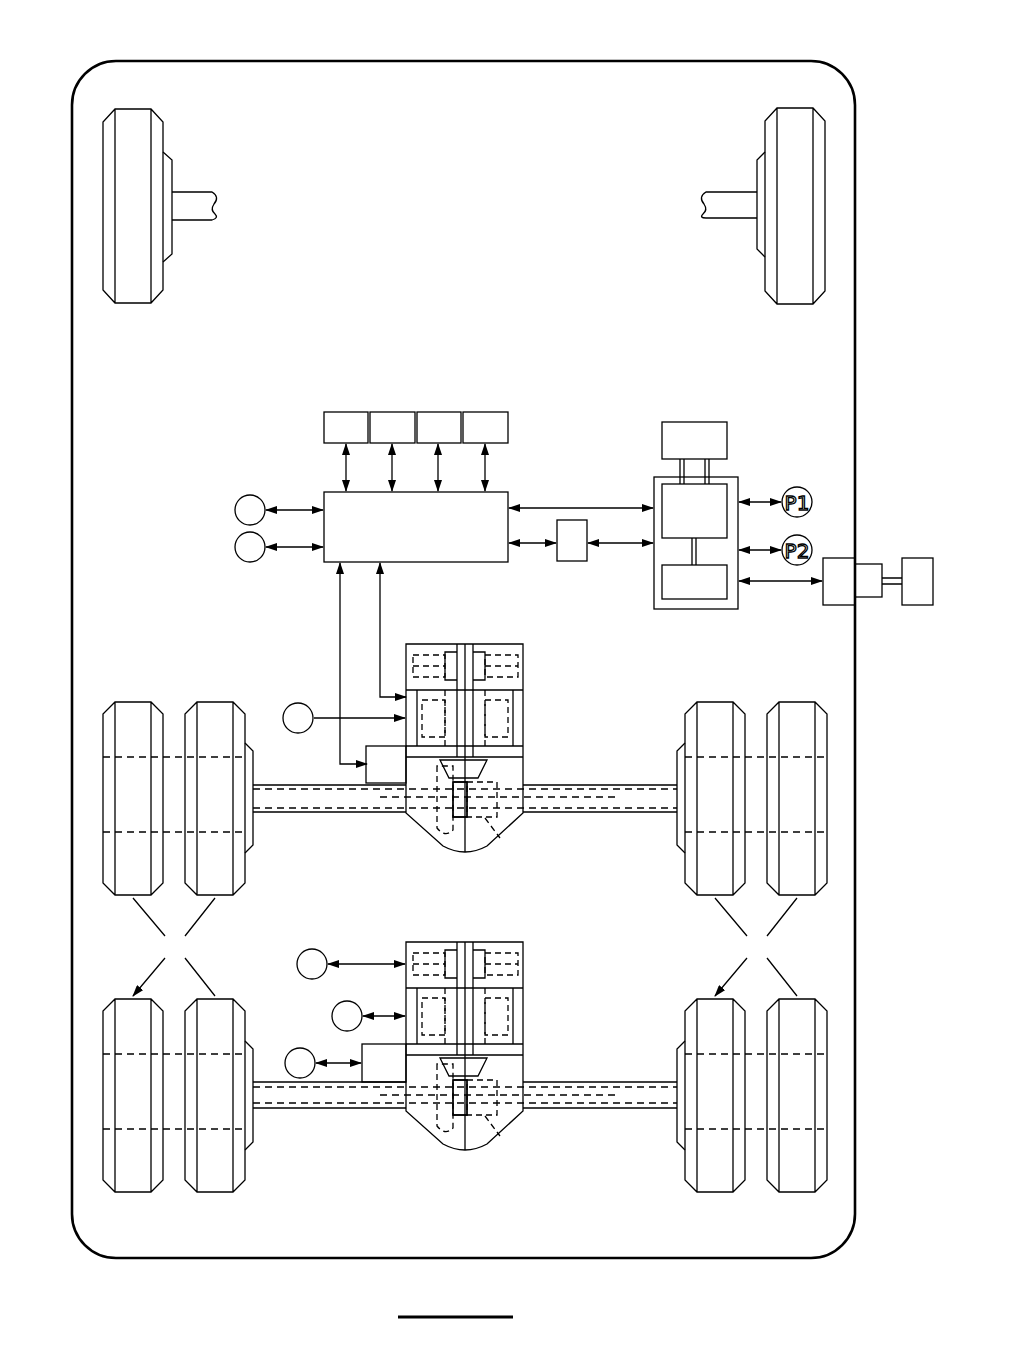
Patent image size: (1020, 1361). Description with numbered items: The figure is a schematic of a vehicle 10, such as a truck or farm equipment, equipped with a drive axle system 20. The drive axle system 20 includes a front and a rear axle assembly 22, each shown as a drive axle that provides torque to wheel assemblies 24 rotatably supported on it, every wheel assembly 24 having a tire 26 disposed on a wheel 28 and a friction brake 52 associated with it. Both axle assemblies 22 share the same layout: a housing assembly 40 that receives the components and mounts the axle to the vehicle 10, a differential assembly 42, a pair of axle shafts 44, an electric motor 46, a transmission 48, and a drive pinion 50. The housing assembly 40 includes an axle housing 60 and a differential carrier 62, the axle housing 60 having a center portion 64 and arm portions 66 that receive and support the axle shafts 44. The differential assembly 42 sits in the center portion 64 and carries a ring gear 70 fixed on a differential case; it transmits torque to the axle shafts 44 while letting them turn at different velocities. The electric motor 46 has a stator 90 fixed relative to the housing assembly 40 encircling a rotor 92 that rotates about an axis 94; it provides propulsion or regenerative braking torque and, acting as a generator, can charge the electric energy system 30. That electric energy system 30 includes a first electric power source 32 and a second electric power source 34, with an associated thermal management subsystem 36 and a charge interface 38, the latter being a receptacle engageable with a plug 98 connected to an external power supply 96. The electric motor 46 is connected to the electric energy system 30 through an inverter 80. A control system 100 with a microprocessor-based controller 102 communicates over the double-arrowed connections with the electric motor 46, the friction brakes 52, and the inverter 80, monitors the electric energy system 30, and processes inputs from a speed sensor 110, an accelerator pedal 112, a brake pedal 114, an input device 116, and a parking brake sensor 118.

The vehicle 10 is at (508, 56).
The drive axle system 20 is at (228, 590).
The axle assembly 22 is at (88, 768).
The wheel assembly 24 is at (465, 947).
The tire 26 is at (215, 702).
The wheel 28 is at (130, 830).
The electric energy system 30 is at (739, 478).
The first electric power source 32 is at (694, 511).
The second electric power source 34 is at (694, 582).
The thermal management subsystem 36 is at (694, 440).
The charge interface 38 is at (839, 581).
The housing assembly 40 is at (493, 636).
The differential assembly 42 is at (490, 830).
The axle shafts 44 is at (298, 814).
The electric motor 46 is at (525, 692).
The transmission 48 is at (525, 648).
The drive pinion 50 is at (490, 770).
The friction brake 52 is at (256, 766).
The axle housing 60 is at (448, 848).
The differential carrier 62 is at (524, 757).
The center portion 64 is at (448, 848).
The arm portion 66 is at (272, 814).
The ring gear 70 is at (427, 824).
The inverter 80 is at (572, 540).
The stator 90 is at (519, 726).
The rotor 92 is at (513, 708).
The axis 94 is at (500, 838).
The power supply 96 is at (917, 581).
The plug 98 is at (867, 580).
The control system 100 is at (445, 355).
The controller 102 is at (416, 527).
The speed sensor 110 is at (385, 914).
The accelerator pedal 112 is at (346, 427).
The brake pedal 114 is at (392, 427).
The input device 116 is at (439, 427).
The parking brake sensor 118 is at (485, 427).